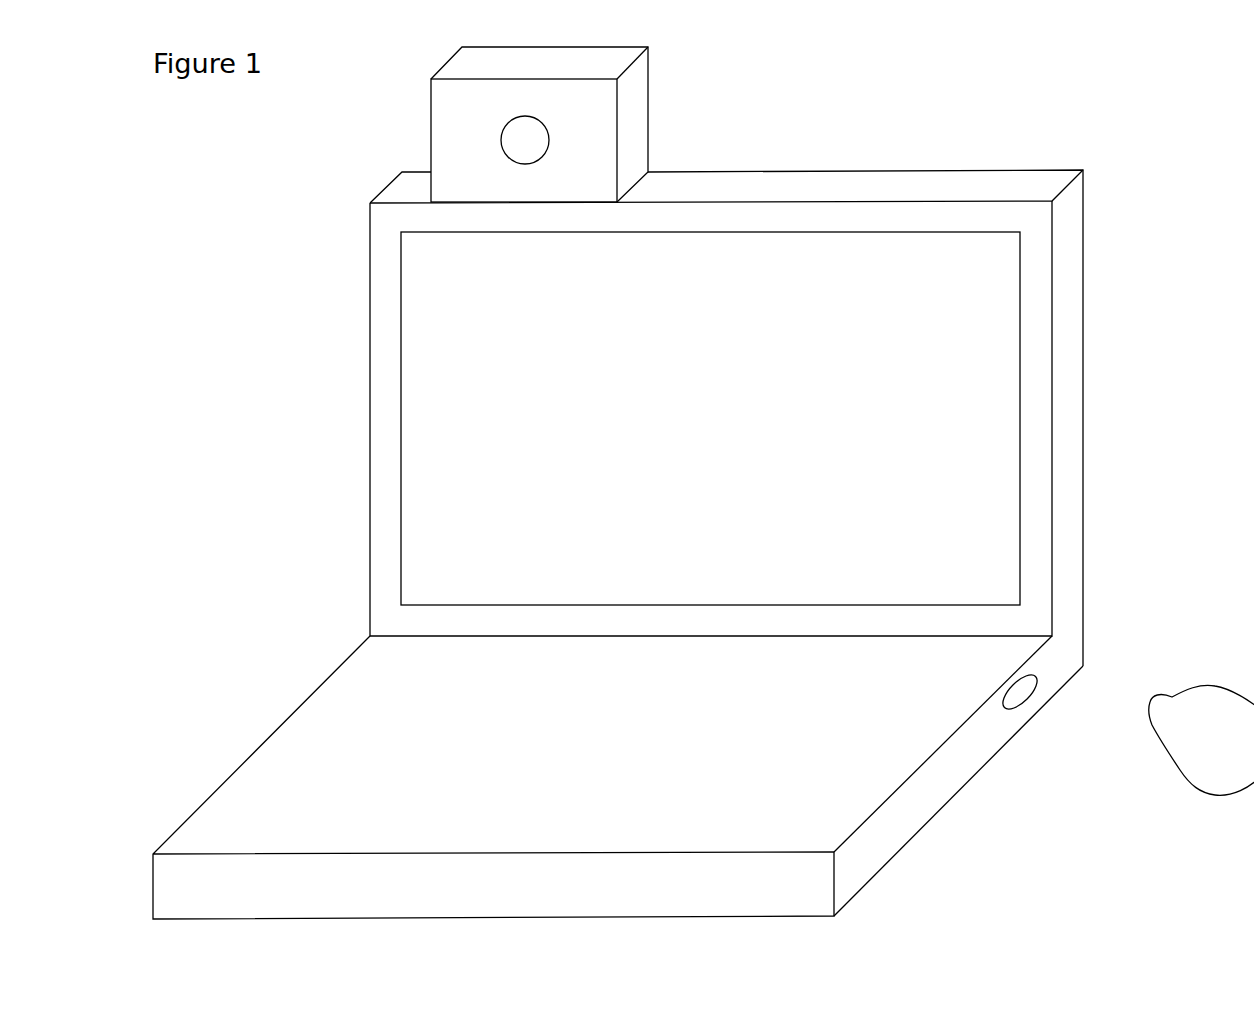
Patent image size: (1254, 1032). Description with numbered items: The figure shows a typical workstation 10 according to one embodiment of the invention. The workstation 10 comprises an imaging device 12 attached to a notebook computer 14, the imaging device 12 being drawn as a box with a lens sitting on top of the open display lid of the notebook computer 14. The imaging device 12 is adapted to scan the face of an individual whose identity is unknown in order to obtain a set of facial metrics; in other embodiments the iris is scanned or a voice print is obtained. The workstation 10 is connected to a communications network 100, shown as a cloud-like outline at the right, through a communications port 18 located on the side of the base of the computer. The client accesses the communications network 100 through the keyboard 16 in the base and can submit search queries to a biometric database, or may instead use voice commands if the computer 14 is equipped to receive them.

The workstation 10 is at (1145, 355).
The imaging device 12 is at (652, 80).
The notebook computer 14 is at (993, 169).
The keyboard 16 is at (853, 800).
The communications port 18 is at (1030, 688).
The communications network 100 is at (1093, 721).